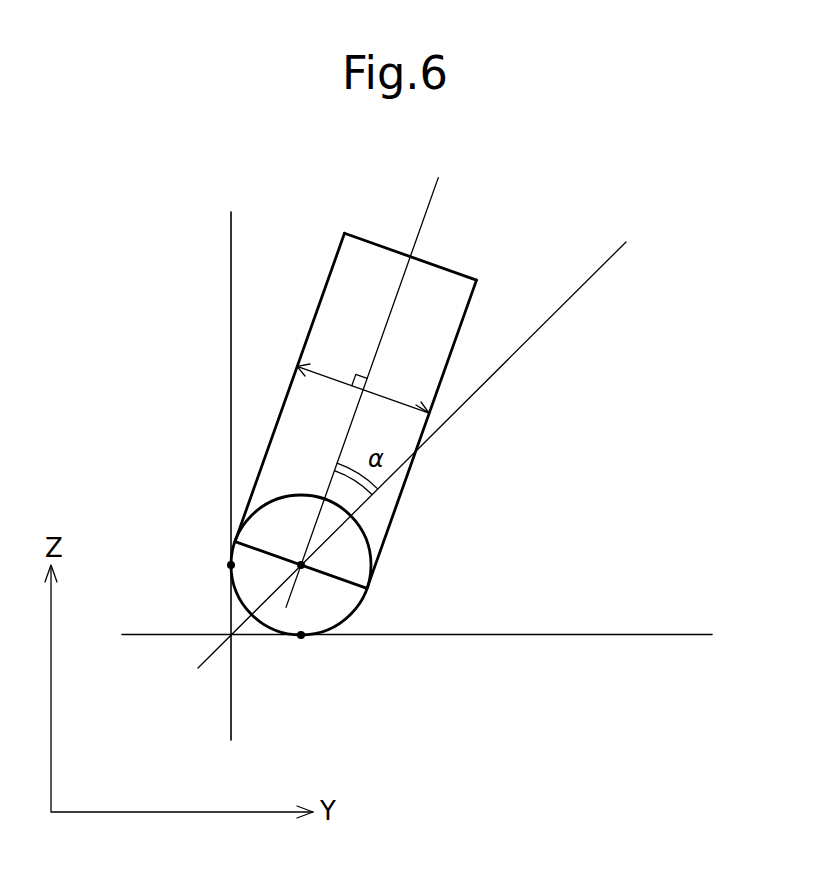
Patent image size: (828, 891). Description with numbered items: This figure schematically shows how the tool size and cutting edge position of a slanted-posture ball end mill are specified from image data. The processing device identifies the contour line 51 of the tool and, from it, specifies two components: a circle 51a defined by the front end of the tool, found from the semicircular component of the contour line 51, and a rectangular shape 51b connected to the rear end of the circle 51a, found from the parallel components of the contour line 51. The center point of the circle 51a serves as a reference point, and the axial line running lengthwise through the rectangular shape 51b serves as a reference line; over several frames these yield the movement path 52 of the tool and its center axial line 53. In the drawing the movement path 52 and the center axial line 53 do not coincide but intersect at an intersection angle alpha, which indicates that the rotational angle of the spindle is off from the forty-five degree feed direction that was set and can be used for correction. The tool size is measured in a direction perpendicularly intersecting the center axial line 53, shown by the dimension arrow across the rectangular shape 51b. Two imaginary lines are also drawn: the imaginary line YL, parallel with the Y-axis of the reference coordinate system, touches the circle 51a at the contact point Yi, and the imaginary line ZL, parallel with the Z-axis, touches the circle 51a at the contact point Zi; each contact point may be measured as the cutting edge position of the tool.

The contour line 51 is at (378, 424).
The circle 51a is at (387, 545).
The rectangular shape 51b is at (452, 270).
The movement path 52 is at (608, 264).
The center axial line 53 is at (433, 193).
The imaginary line ZL is at (230, 263).
The imaginary line YL is at (620, 637).
The contact point Zi is at (229, 565).
The contact point Yi is at (303, 637).